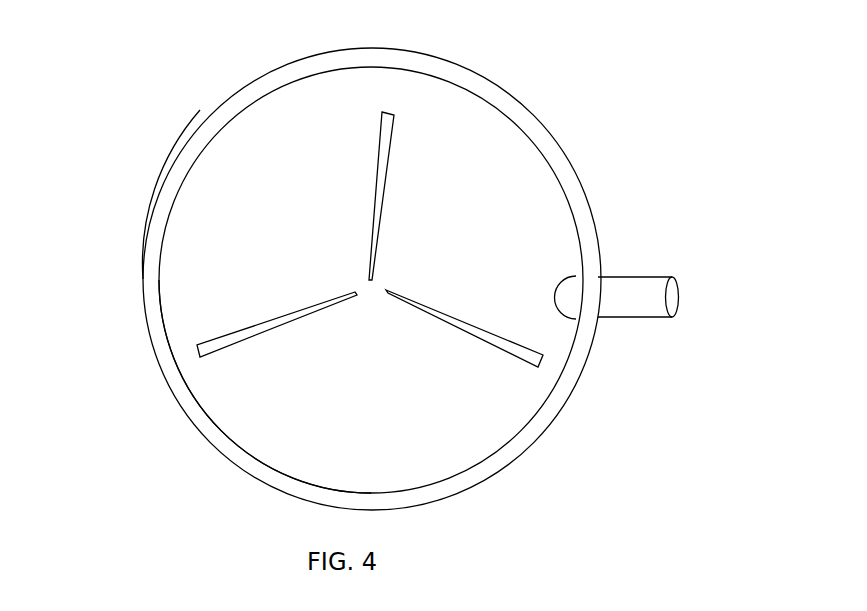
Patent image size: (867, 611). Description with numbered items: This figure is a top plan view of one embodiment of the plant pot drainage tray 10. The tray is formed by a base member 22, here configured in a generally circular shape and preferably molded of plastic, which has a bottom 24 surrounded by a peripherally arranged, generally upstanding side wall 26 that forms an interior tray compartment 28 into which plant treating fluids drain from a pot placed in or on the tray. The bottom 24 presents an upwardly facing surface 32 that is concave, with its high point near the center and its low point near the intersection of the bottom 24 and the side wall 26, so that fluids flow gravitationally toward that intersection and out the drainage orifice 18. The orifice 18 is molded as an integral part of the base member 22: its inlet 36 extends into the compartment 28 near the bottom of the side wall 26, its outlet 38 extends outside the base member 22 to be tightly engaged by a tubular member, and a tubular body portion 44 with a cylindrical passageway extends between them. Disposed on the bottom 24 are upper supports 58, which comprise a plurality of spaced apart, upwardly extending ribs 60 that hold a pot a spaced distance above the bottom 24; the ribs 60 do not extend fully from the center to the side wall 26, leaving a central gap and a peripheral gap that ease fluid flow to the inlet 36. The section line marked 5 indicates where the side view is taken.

The drainage tray 10 is at (611, 180).
The drainage orifice 18 is at (620, 273).
The base member 22 is at (533, 125).
The bottom 24 is at (237, 208).
The side wall 26 is at (152, 217).
The interior tray compartment 28 is at (335, 132).
The upwardly facing surface 32 is at (268, 413).
The inlet 36 is at (567, 298).
The outlet 38 is at (672, 292).
The tubular body portion 44 is at (627, 298).
The upper supports 58 is at (230, 328).
The ribs 60 is at (390, 123).
The section line 5- 5 is at (135, 275).